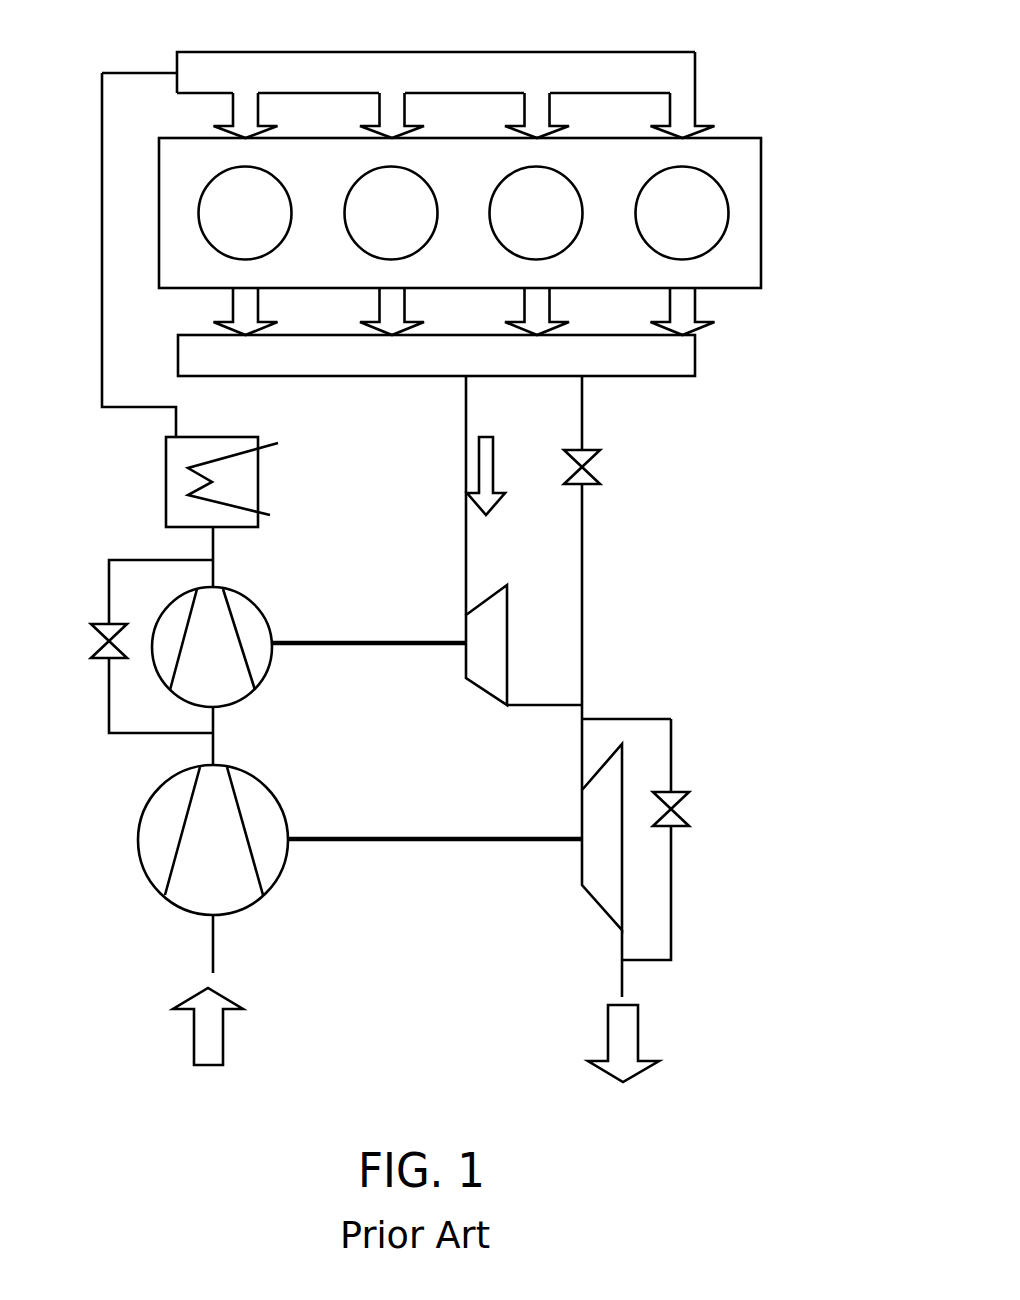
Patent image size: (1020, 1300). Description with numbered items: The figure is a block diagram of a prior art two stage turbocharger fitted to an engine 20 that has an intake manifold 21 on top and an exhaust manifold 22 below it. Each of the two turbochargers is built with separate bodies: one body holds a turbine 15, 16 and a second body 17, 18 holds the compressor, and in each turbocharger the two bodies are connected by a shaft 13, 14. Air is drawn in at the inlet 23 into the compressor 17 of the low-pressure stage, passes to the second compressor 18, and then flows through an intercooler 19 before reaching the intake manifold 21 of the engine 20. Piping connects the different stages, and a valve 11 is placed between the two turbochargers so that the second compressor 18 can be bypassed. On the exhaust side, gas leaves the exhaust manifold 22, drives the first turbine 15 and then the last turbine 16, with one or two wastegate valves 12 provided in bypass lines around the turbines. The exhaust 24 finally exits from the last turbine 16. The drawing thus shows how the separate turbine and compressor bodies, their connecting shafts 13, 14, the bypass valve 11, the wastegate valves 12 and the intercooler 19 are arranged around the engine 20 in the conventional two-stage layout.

The valve 11 is at (102, 625).
The wastegate valve 12 is at (590, 485).
The shaft 13 is at (440, 846).
The shaft 14 is at (397, 646).
The turbine 15 is at (507, 618).
The turbine 16 is at (622, 860).
The compressor 17 is at (145, 872).
The compressor 18 is at (153, 667).
The intercooler 19 is at (163, 452).
The engine 20 is at (760, 210).
The intake manifold 21 is at (668, 52).
The exhaust manifold 22 is at (695, 355).
The intake air 23 is at (193, 1037).
The exhaust 24 is at (605, 1018).